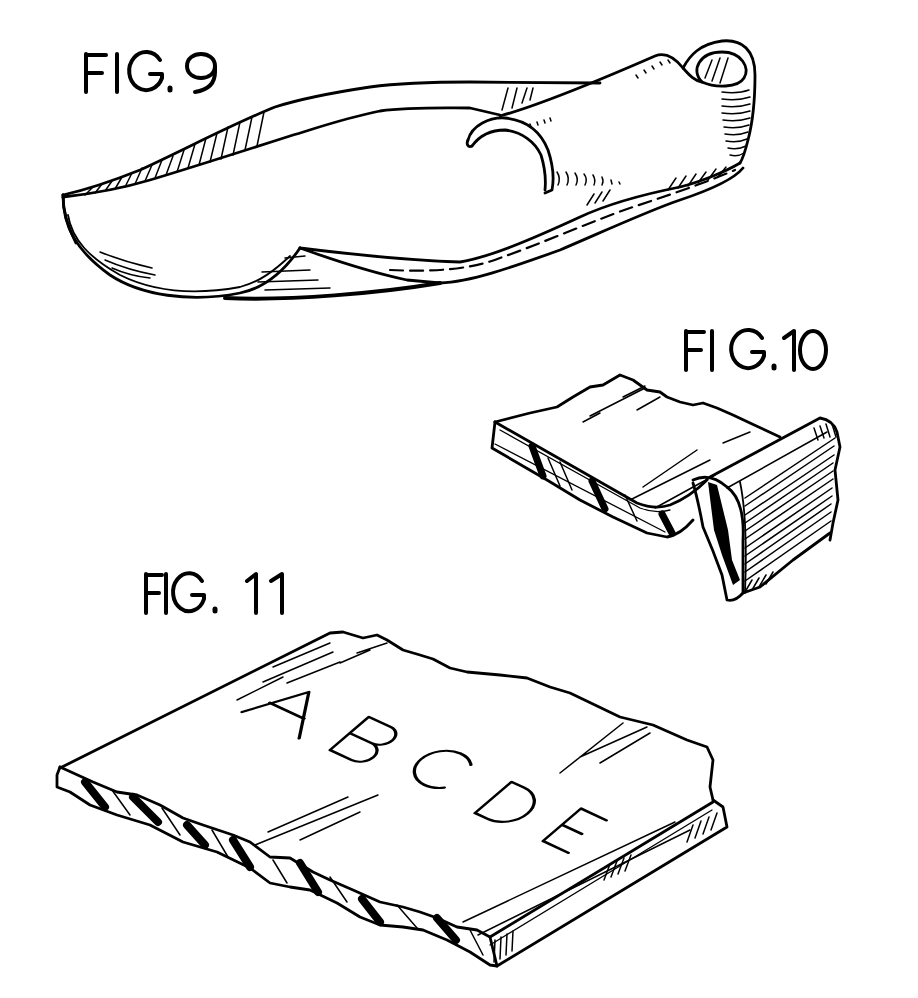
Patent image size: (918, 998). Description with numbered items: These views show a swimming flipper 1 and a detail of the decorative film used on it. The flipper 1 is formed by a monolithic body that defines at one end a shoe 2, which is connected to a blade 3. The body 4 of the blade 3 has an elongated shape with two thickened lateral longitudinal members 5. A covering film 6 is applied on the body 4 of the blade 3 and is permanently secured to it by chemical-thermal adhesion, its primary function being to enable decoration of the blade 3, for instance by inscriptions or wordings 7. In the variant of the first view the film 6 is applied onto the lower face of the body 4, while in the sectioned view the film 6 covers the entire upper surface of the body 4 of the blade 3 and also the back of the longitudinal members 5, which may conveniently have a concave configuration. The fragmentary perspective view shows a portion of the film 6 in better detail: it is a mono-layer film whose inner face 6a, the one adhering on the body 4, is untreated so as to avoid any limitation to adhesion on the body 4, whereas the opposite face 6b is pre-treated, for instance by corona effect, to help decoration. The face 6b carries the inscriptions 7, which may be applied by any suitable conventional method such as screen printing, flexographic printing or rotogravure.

In FIG. 9, the swimming flipper 1 is at (558, 22).
In FIG. 9, the shoe 2 is at (750, 110).
In FIG. 9, the blade 3 is at (69, 239).
In FIG. 9, the body of the blade 4 is at (132, 288).
In FIG. 10, the body of the blade 4 is at (520, 460).
In FIG. 9, the thickened lateral longitudinal members 5 is at (341, 91).
In FIG. 10, the thickened lateral longitudinal members 5 is at (797, 530).
In FIG. 9, the covering film 6 is at (313, 279).
In FIG. 10, the covering film 6 is at (570, 418).
In FIG. 11, the covering film 6 is at (134, 722).
In FIG. 11, the inner face of the film 6a is at (230, 857).
In FIG. 11, the opposite face of the film 6b is at (690, 782).
In FIG. 11, the inscriptions 7 is at (310, 704).